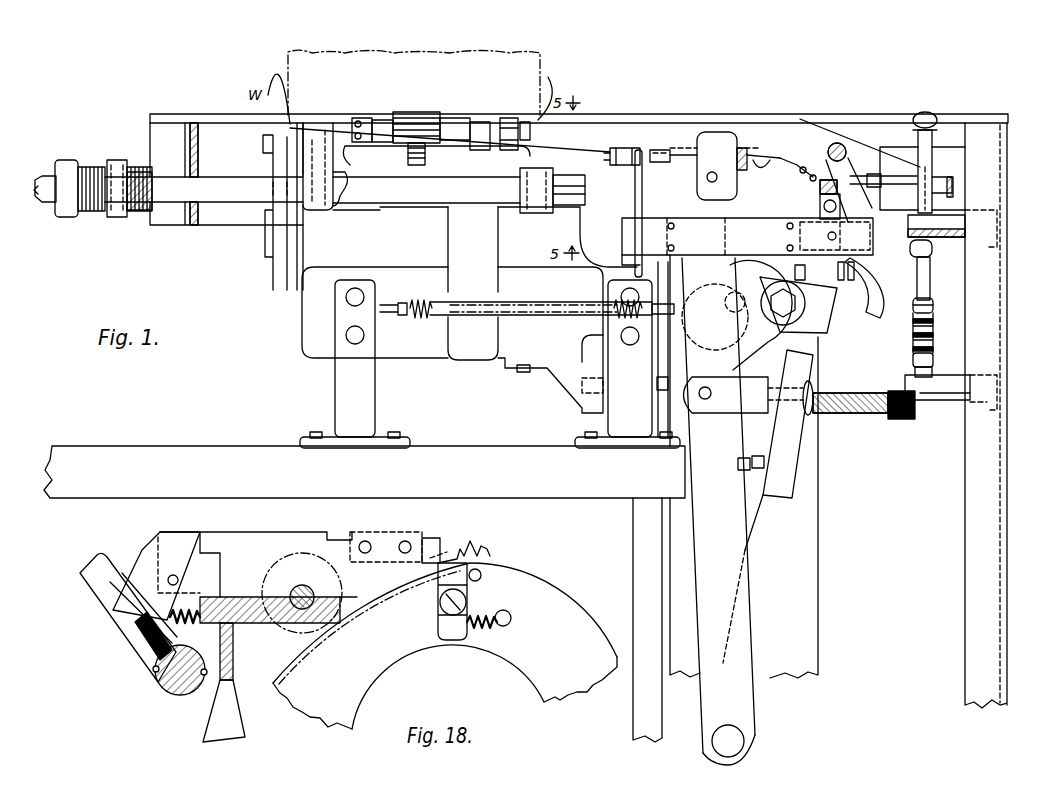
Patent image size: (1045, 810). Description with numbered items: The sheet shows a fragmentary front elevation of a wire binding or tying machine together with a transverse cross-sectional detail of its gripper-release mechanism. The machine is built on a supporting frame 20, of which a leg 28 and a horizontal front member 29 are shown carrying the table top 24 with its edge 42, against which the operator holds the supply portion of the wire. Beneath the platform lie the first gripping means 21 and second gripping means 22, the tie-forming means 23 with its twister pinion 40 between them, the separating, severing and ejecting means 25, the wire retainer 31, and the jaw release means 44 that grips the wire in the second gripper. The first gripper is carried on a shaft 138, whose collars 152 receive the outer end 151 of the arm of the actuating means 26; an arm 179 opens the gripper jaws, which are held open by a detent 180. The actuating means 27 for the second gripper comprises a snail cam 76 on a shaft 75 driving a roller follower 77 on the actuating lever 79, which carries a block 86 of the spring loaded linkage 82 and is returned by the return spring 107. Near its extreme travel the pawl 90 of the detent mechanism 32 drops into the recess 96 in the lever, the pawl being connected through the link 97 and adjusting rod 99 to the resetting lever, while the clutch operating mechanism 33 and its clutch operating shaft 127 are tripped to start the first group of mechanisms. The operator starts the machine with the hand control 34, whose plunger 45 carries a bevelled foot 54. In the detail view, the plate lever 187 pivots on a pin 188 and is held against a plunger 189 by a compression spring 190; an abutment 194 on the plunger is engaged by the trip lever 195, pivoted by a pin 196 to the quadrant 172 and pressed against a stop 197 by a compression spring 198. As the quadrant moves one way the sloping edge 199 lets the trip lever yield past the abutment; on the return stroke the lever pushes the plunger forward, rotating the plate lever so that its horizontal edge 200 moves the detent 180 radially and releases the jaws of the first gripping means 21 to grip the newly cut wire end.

In FIG. 1, the supporting frame 20 is at (169, 457).
In FIG. 1, the first gripping means 21 is at (330, 106).
In FIG. 1, the second gripping means 22 is at (727, 108).
In FIG. 1, the tie-forming means 23 is at (420, 102).
In FIG. 1, the table top 24 is at (214, 114).
In FIG. 1, the separating, severing and ejecting means 25 is at (375, 122).
In FIG. 1, the actuating means 26 is at (126, 152).
In FIG. 1, the actuating means 27 is at (848, 329).
In FIG. 1, the leg 28 is at (993, 430).
In FIG. 1, the horizontal front member 29 is at (901, 130).
In FIG. 1, the wire retainer 31 is at (519, 118).
In FIG. 1, the detent mechanism 32 is at (875, 228).
In FIG. 1, the clutch operating mechanism 33 is at (845, 158).
In FIG. 1, the hand control 34 is at (956, 276).
In FIG. 1, the twister pinion 40 is at (431, 117).
In FIG. 1, the edge 42 is at (825, 118).
In FIG. 1, the jaw release means 44 is at (649, 145).
In FIG. 1, the plunger 45 is at (917, 271).
In FIG. 1, the bevelled foot 54 is at (925, 405).
In FIG. 1, the shaft 75 is at (748, 290).
In FIG. 1, the snail cam 76 is at (755, 351).
In FIG. 1, the roller follower 77 is at (774, 284).
In FIG. 1, the actuating lever 79 is at (788, 521).
In FIG. 1, the spring loaded linkage 82 is at (885, 427).
In FIG. 1, the block 86 is at (795, 442).
In FIG. 1, the pawl 90 is at (875, 243).
In FIG. 1, the recess 96 is at (842, 258).
In FIG. 1, the link 97 is at (866, 182).
In FIG. 1, the adjusting rod 99 is at (850, 179).
In FIG. 1, the return spring 107 is at (419, 299).
In FIG. 1, the clutch operating shaft 127 is at (839, 149).
In FIG. 18, the shaft 138 is at (180, 694).
In FIG. 1, the outer end 151 is at (88, 167).
In FIG. 1, the collars 152 is at (70, 214).
In FIG. 18, the quadrant 172 is at (570, 605).
In FIG. 1, the arm 179 is at (287, 158).
In FIG. 1, the detent 180 is at (337, 178).
In FIG. 18, the detent 180 is at (132, 618).
In FIG. 18, the plate lever 187 is at (143, 549).
In FIG. 18, the pin 188 is at (178, 581).
In FIG. 18, the plunger 189 is at (240, 553).
In FIG. 18, the compression spring 190 is at (184, 619).
In FIG. 18, the abutment 194 is at (431, 541).
In FIG. 18, the trip lever 195 is at (478, 556).
In FIG. 18, the pin 196 is at (466, 601).
In FIG. 18, the stop 197 is at (481, 575).
In FIG. 18, the compression spring 198 is at (493, 626).
In FIG. 18, the sloping edge 199 is at (455, 560).
In FIG. 18, the horizontal edge 200 is at (116, 618).